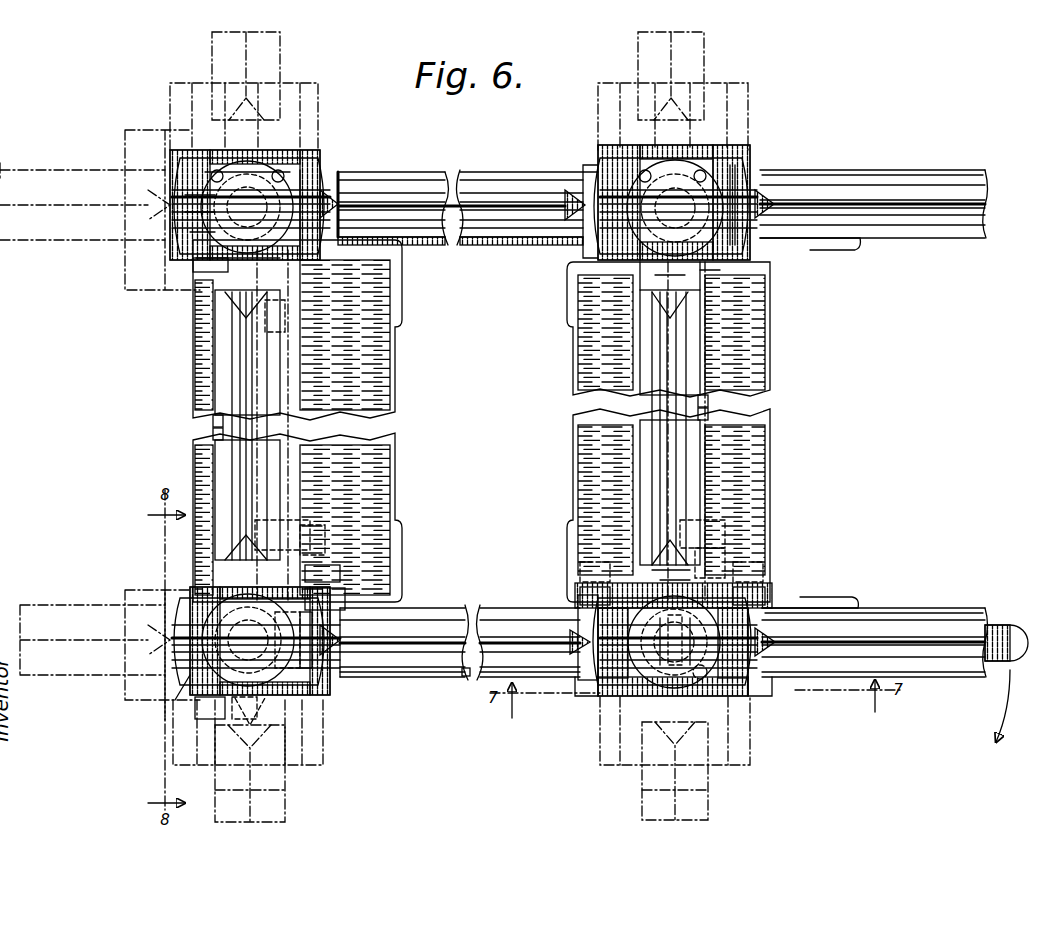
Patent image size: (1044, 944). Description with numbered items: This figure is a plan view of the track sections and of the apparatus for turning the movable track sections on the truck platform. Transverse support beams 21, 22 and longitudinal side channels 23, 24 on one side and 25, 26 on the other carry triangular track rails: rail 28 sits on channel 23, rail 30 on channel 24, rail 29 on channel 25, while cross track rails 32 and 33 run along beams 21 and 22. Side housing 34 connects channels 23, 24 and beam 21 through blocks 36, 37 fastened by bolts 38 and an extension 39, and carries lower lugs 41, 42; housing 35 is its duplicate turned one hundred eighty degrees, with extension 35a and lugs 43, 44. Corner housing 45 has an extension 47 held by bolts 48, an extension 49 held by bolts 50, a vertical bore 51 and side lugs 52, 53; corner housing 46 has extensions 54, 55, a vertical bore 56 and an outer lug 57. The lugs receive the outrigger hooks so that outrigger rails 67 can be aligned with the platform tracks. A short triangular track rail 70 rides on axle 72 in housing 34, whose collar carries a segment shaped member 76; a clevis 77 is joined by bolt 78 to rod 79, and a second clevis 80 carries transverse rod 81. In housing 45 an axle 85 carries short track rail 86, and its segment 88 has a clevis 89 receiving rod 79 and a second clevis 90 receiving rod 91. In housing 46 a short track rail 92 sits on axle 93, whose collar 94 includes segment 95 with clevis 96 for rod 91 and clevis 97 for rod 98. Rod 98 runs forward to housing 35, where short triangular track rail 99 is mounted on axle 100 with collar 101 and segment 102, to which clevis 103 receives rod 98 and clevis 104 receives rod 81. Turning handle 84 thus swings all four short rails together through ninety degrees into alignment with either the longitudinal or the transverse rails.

The support beam 21 is at (768, 445).
The support beam 22 is at (392, 484).
The longitudinal side channel 23 is at (880, 608).
The longitudinal side channel 24 is at (478, 605).
The side channel 25 is at (855, 170).
The side channel 26 is at (498, 172).
The track rail 28 is at (183, 152).
The track rail 29 is at (906, 172).
The track rail 30 is at (433, 615).
The cross track rail 32 is at (648, 352).
The track rail 33 is at (228, 362).
The housing 34 is at (675, 657).
The housing 35 is at (740, 150).
The extension 35a is at (722, 282).
The block 36 is at (583, 598).
The block 37 is at (540, 228).
The bolt 38 is at (596, 560).
The extension 39 is at (700, 520).
The block 41 is at (750, 698).
The block 42 is at (598, 694).
The lug 43 is at (745, 160).
The lug 44 is at (600, 160).
The housing 45 is at (295, 697).
The housing 46 is at (262, 178).
The extension 47 is at (275, 522).
The bolt 48 is at (318, 538).
The extension 49 is at (345, 605).
The bolt 50 is at (322, 565).
The vertical bore 51 is at (257, 708).
The side lug 52 is at (330, 688).
The side lug 53 is at (175, 700).
The extension 54 is at (300, 262).
The extension 55 is at (290, 292).
The vertical bore 56 is at (302, 195).
The outer lug 57 is at (292, 177).
The track rail 67 is at (285, 790).
The short triangular track rail 70 is at (636, 660).
The axle 72 is at (661, 568).
The segment shaped member 76 is at (752, 688).
The clevis 77 is at (652, 668).
The bolt 78 is at (686, 691).
The rod 79 is at (468, 677).
The second clevis 80 is at (712, 570).
The rod 81 is at (708, 405).
The handle 84 is at (997, 625).
The axle 85 is at (340, 636).
The short track rail 86 is at (210, 708).
The segment 88 is at (243, 725).
The clevis 89 is at (300, 697).
The second clevis 90 is at (172, 650).
The rod 91 is at (213, 436).
The short track rail 92 is at (178, 212).
The axle 93 is at (205, 180).
The collar 94 is at (318, 180).
The segment 95 is at (195, 233).
The clevis 96 is at (198, 260).
The clevis 97 is at (248, 168).
The rod 98 is at (448, 172).
The short triangular track rail 99 is at (772, 204).
The axle 100 is at (696, 150).
The collar 101 is at (615, 275).
The segment 102 is at (659, 150).
The clevis 103 is at (660, 160).
The clevis 104 is at (750, 178).